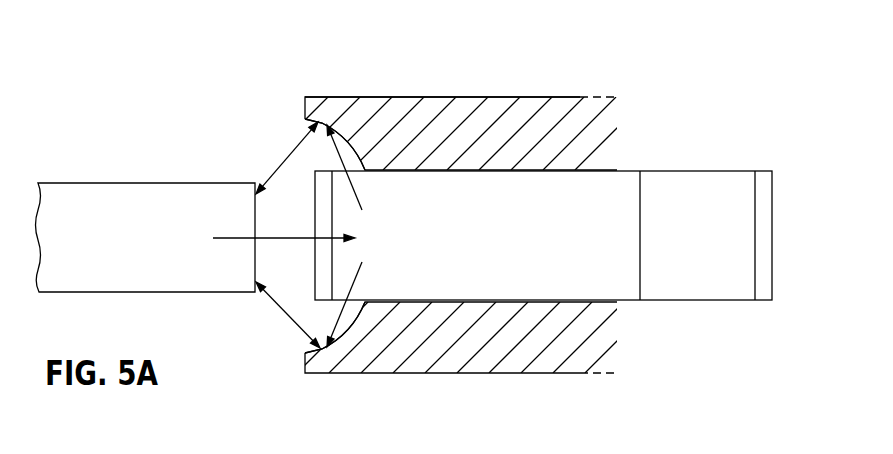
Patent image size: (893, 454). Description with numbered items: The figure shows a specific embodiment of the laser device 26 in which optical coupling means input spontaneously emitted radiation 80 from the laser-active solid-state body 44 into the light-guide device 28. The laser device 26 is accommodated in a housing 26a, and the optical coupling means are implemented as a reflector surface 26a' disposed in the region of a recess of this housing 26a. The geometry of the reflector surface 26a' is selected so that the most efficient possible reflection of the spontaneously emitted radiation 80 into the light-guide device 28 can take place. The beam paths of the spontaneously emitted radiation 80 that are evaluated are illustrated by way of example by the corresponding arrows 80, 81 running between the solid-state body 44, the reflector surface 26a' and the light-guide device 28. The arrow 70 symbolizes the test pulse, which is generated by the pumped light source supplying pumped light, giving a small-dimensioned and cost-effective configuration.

The laser device 26 is at (628, 130).
The housing 26a is at (442, 49).
The reflector surface 26a' is at (297, 202).
The light-guide device 28 is at (88, 183).
The test pulse 70 is at (230, 238).
The laser-active solid-state body 44 is at (620, 272).
The spontaneously emitted radiation 80 is at (355, 192).
The arrow illustrating beam path of spontaneously emitted radiation 81 is at (283, 316).